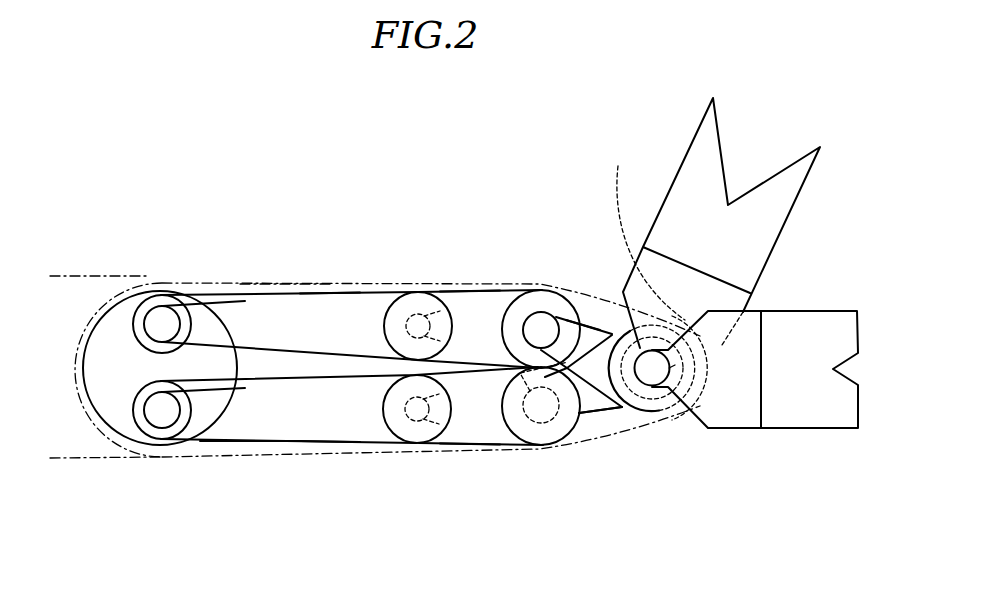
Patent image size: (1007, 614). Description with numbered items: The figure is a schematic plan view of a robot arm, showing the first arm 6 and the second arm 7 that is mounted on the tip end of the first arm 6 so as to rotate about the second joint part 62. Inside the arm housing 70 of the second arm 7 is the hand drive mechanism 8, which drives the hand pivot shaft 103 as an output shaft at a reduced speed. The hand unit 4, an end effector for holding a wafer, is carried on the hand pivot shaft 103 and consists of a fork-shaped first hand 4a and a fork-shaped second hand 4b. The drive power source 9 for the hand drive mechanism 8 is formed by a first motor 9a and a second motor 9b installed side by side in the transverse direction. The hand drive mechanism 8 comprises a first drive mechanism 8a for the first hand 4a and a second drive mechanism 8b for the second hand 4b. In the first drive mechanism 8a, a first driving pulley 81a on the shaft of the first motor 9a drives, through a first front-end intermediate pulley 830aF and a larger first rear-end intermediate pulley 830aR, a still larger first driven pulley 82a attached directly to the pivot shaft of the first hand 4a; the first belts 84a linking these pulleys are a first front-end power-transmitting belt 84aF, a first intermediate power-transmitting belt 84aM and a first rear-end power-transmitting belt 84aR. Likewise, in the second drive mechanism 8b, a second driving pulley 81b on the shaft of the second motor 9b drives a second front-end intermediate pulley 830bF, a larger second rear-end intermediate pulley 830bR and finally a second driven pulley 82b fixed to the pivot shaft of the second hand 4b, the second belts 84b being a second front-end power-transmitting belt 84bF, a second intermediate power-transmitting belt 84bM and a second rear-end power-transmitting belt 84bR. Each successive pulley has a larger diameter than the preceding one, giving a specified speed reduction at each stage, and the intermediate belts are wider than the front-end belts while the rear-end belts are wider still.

The first arm 6 is at (68, 270).
The second arm 7 is at (232, 272).
The arm housing 70 is at (282, 282).
The second joint part 62 is at (89, 409).
The drive power source 9 is at (95, 197).
The first motor 9a is at (140, 395).
The second motor 9b is at (150, 296).
The first driving pulley 81a is at (172, 413).
The second driving pulley 81b is at (172, 322).
The hand drive mechanism 8 is at (240, 448).
The first drive mechanism 8a is at (320, 412).
The second drive mechanism 8b is at (319, 314).
The first belts 84a is at (337, 540).
The first front-end power-transmitting belt 84aF is at (350, 440).
The first intermediate power-transmitting belt 84aM is at (477, 440).
The first rear-end power-transmitting belt 84aR is at (593, 440).
The second belts 84b is at (585, 182).
The second front-end power-transmitting belt 84bF is at (333, 290).
The second intermediate power-transmitting belt 84bM is at (467, 290).
The second rear-end power-transmitting belt 84bR is at (587, 290).
The first front-end intermediate pulley 830aF is at (420, 456).
The first rear-end intermediate pulley 830aR is at (542, 457).
The second front-end intermediate pulley 830bF is at (415, 285).
The second rear-end intermediate pulley 830bR is at (539, 285).
The hand pivot shaft 103 is at (665, 398).
The first driven pulley 82a is at (629, 230).
The second driven pulley 82b is at (732, 328).
The hand unit 4 is at (831, 233).
The first hand 4a is at (801, 310).
The second hand 4b is at (786, 224).